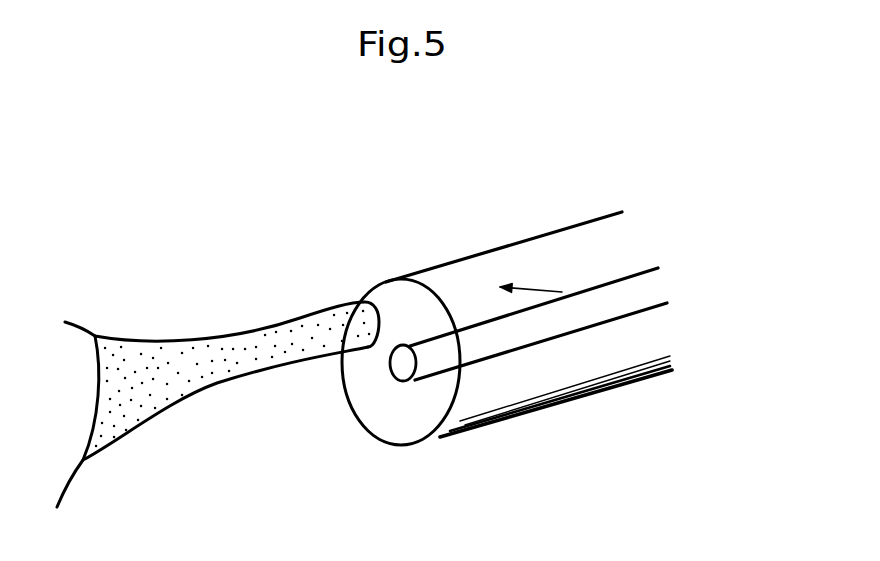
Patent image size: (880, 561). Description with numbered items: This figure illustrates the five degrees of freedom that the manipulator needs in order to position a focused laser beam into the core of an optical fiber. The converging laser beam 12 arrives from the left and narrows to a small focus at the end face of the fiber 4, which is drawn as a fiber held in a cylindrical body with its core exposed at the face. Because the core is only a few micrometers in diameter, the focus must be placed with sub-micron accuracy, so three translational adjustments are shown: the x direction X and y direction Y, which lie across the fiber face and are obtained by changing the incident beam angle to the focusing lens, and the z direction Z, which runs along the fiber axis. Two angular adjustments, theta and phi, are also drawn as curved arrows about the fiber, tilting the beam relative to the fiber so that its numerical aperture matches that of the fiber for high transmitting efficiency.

The light beam 12 is at (118, 337).
The optical fiber 4 is at (480, 430).
The x direction X is at (272, 310).
The y direction Y is at (220, 385).
The z direction Z is at (492, 220).